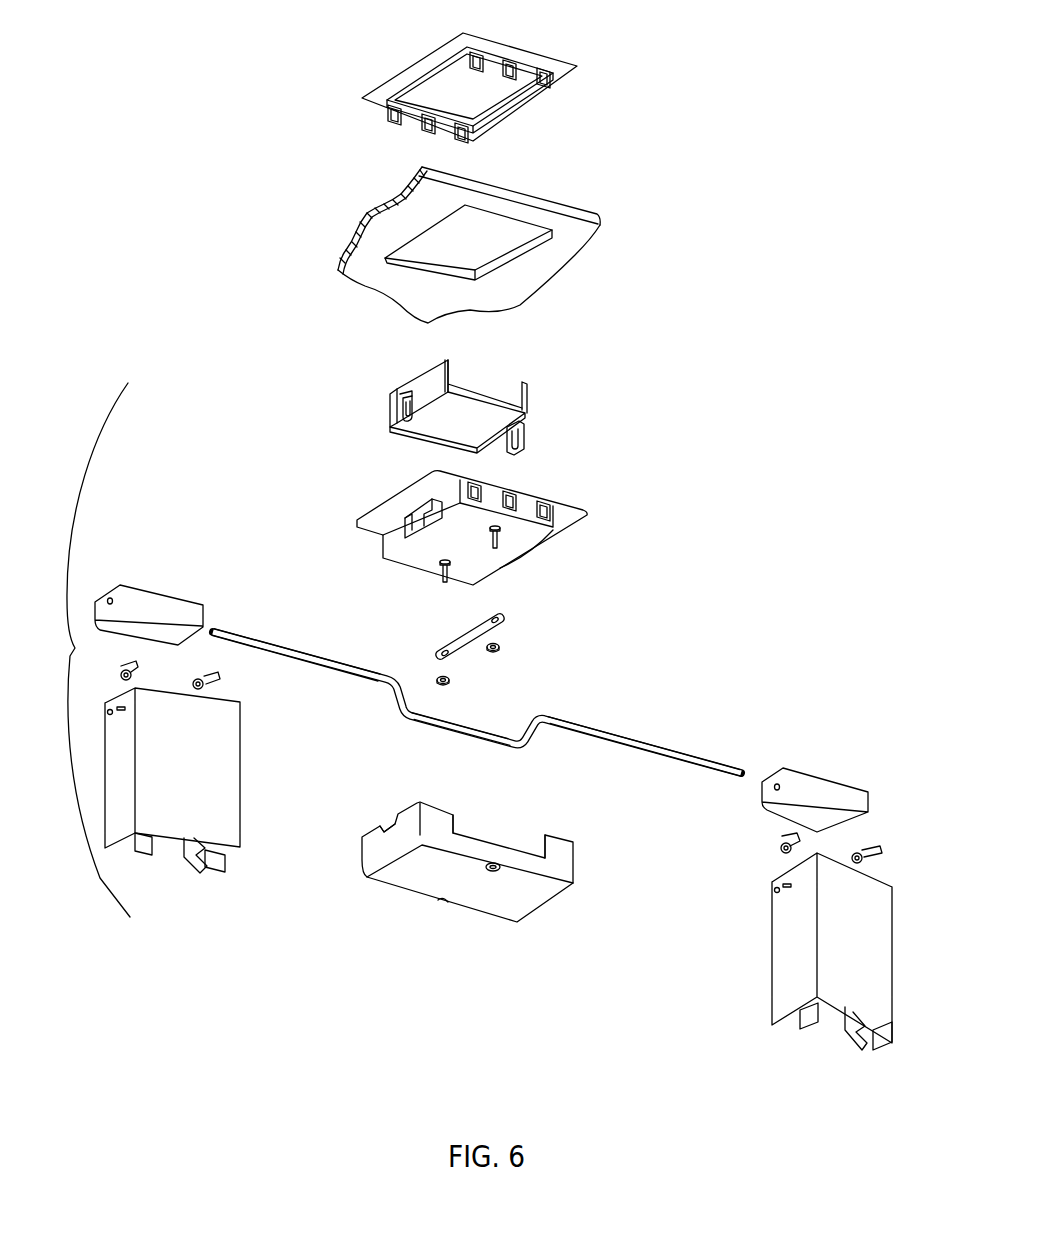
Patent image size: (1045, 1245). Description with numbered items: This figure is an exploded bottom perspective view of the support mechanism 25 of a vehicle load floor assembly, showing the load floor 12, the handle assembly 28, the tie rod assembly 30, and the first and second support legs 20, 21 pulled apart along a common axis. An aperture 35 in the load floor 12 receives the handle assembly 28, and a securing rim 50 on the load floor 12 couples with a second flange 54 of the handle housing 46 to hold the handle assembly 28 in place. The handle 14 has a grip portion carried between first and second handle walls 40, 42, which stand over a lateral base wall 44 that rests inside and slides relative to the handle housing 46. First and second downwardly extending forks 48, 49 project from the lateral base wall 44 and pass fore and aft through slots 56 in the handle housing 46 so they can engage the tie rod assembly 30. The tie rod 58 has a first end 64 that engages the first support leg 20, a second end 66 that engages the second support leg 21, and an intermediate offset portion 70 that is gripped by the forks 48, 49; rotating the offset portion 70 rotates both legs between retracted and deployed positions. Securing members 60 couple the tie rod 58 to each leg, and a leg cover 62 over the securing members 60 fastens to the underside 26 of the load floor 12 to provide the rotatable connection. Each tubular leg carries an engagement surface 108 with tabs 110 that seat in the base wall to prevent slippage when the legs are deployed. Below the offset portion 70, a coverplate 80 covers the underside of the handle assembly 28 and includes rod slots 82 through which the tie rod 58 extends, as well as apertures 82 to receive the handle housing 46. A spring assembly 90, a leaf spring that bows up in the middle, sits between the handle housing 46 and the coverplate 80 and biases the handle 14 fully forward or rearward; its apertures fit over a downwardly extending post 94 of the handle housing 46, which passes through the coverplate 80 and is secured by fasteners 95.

The securing rim 50 is at (537, 55).
The load floor 12 is at (486, 250).
The underside 26 is at (562, 253).
The aperture 35 is at (432, 247).
The handle assembly 28 is at (569, 367).
The first handle wall 40 is at (428, 383).
The handle 14 is at (473, 383).
The second handle wall 42 is at (530, 395).
The first downwardly extending fork 48 is at (408, 418).
The lateral base wall 44 is at (473, 422).
The second downwardly extending fork 49 is at (518, 455).
The second flange 54 is at (492, 531).
The slots 56 is at (427, 517).
The handle housing 46 is at (520, 535).
The downwardly extending post 94 is at (493, 546).
The support mechanism 25 is at (87, 650).
The leg cover 62 is at (180, 600).
The securing members 60 is at (200, 671).
The first support leg 20 is at (218, 763).
The second support leg 21 is at (785, 945).
The engagement surface 108 is at (227, 848).
The tabs 110 is at (215, 872).
The tie rod assembly 30 is at (489, 710).
The tie rod 58 is at (477, 721).
The first end 64 is at (335, 665).
The intermediate offset portion 70 is at (450, 728).
The second end 66 is at (663, 753).
The spring assembly 90 is at (455, 637).
The fasteners 95 is at (497, 652).
The coverplate 80 is at (468, 862).
The rod slots 82 is at (385, 818).